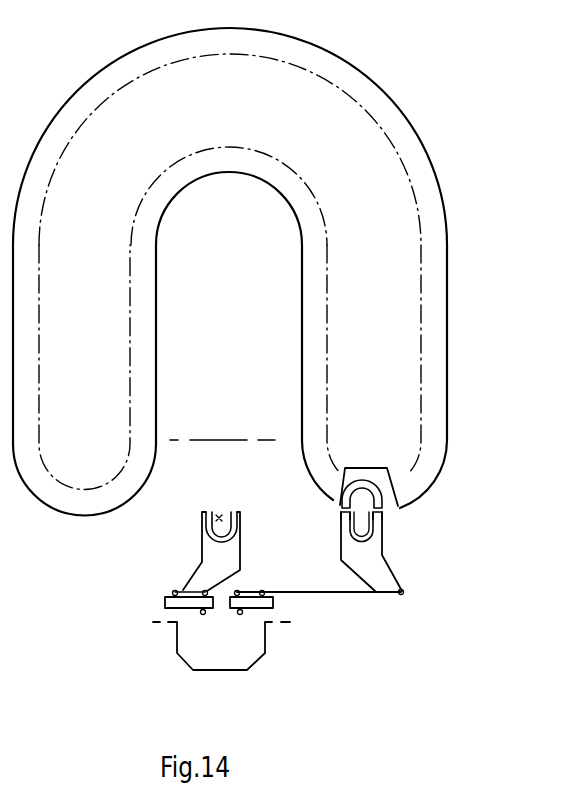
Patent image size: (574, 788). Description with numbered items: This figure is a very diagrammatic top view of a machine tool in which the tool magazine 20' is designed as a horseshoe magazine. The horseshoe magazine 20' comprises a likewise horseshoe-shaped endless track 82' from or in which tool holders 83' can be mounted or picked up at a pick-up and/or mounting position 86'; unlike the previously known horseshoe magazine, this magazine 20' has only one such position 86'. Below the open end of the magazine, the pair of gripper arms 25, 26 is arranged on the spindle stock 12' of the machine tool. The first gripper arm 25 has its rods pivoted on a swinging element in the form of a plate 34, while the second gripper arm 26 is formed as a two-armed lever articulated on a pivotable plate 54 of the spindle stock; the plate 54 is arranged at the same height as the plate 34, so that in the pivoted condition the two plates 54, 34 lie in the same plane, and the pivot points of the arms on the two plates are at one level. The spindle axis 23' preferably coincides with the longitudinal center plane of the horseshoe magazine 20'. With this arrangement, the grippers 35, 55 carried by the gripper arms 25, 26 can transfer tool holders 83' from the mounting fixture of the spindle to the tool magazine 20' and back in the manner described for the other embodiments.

The tool magazine 20' is at (230, 272).
The endless track 82' is at (270, 272).
The tool holder 83' is at (427, 487).
The pick-up and/or mounting position 86' is at (414, 508).
The gripper 35 is at (375, 540).
The gripper 55 is at (233, 550).
The spindle axis 23' is at (238, 488).
The second gripper arm 26 is at (190, 591).
The plate 54 is at (165, 603).
The plate 34 is at (274, 603).
The first gripper arm 25 is at (345, 594).
The spindle stock 12' is at (230, 659).